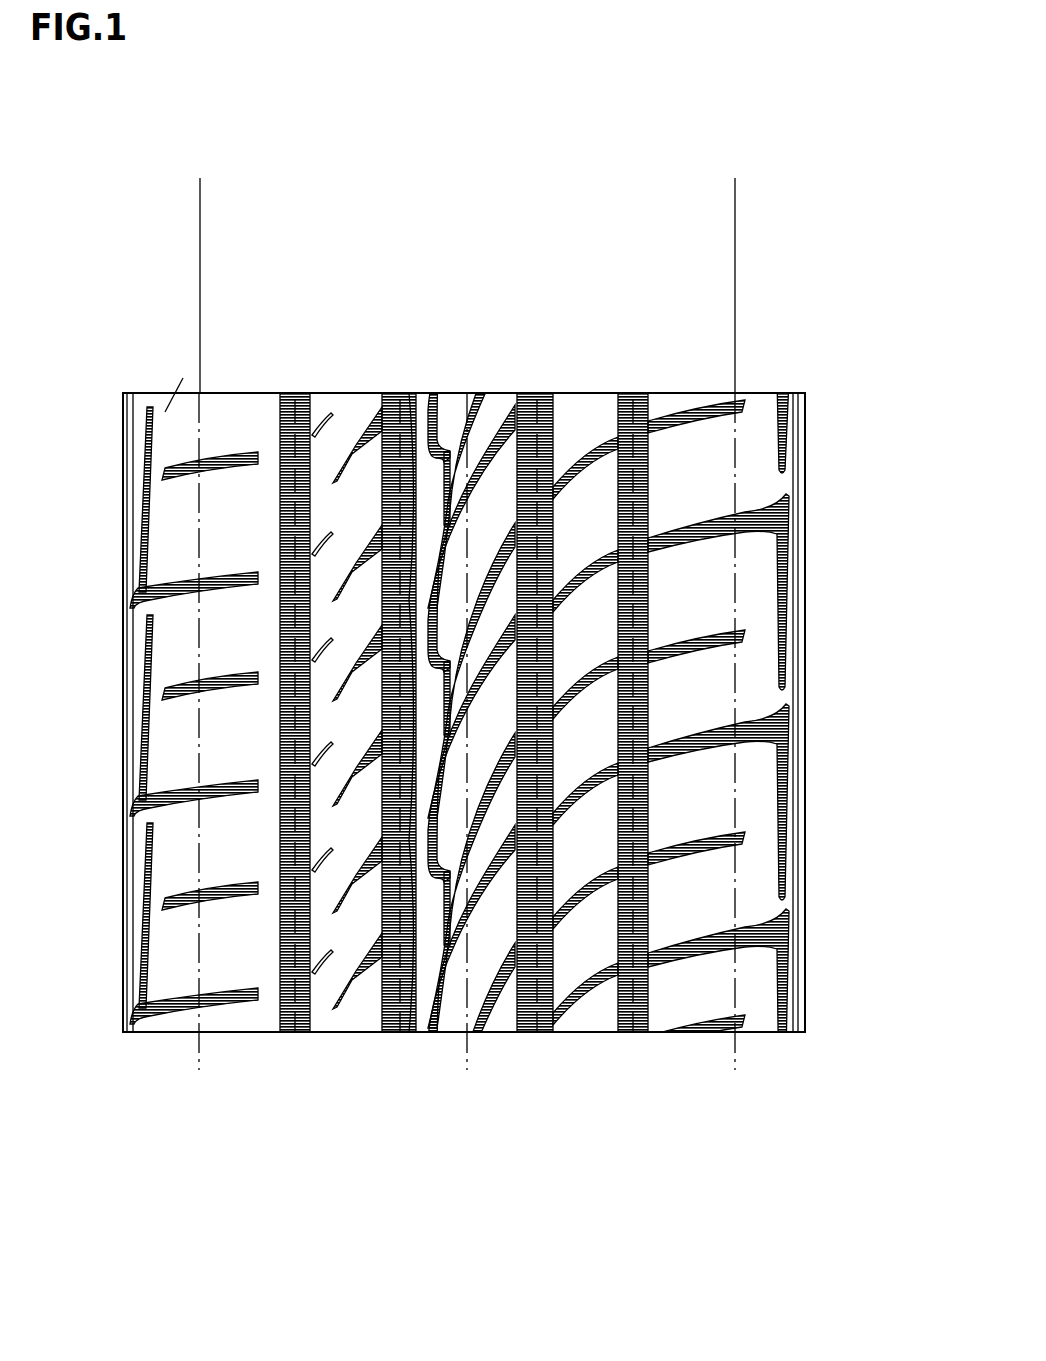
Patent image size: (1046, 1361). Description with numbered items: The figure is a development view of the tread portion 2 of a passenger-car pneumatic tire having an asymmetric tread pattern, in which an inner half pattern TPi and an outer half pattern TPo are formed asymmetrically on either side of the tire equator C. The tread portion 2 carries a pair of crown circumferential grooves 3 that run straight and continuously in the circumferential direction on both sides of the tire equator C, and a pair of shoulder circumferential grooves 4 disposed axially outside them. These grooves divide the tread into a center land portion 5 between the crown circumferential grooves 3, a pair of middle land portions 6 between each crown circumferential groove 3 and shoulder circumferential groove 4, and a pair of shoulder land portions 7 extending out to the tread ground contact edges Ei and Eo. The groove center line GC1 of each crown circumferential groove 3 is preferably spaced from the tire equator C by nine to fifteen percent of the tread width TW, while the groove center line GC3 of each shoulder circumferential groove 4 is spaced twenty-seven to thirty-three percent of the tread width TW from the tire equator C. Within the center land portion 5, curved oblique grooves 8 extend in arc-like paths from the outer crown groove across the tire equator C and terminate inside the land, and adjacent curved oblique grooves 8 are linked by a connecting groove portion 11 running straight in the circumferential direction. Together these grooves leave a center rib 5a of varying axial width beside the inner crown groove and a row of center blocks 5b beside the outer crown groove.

The tread portion 2 is at (757, 318).
The crown circumferential grooves 3 is at (392, 398).
The shoulder circumferential grooves 4 is at (288, 398).
The center land portion 5 is at (425, 716).
The center rib 5a is at (433, 920).
The center blocks 5b is at (493, 997).
The middle land portions 6 is at (352, 398).
The shoulder land portions 7 is at (232, 398).
The curved oblique grooves 8 is at (433, 995).
The connecting groove portion 11 is at (423, 958).
The tire equator C is at (467, 393).
The tread width TW is at (733, 184).
The tread ground contact edge Ei is at (198, 371).
The tread ground contact edge Eo is at (736, 368).
The groove center line GC1 is at (398, 497).
The groove center line GC3 is at (295, 490).
The inner half pattern TPi is at (252, 1122).
The outer half pattern TPo is at (677, 1122).